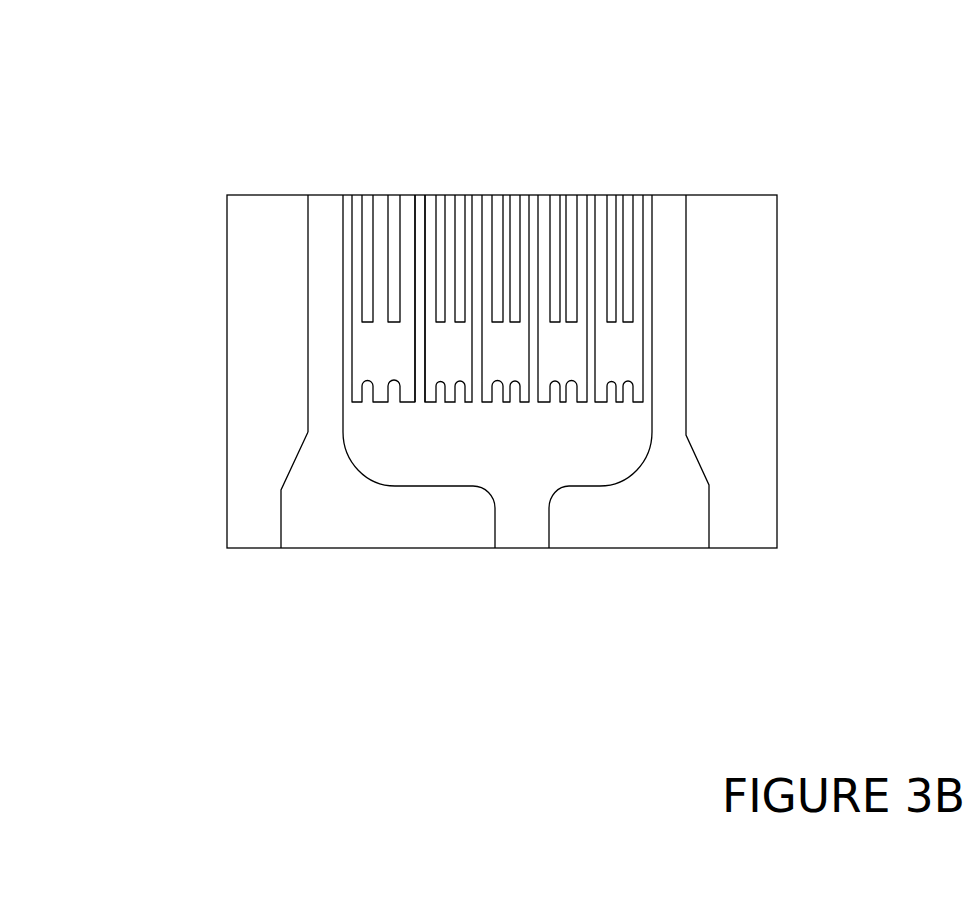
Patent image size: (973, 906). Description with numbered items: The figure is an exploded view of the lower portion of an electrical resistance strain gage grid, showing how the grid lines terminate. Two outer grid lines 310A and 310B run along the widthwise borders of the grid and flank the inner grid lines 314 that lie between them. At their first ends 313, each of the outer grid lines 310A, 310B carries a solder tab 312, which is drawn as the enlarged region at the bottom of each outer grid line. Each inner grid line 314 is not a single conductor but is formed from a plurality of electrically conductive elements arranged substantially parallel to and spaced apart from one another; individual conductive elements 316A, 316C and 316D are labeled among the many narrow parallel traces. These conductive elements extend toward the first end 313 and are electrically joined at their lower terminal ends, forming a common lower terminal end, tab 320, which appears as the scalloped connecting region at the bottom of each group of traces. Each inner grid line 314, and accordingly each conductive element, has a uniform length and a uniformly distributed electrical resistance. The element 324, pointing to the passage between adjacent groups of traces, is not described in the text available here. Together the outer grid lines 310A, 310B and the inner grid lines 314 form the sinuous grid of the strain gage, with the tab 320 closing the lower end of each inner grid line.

The outer grid line 310A is at (186, 313).
The outer grid line 310B is at (797, 371).
The solder tab 312 is at (474, 422).
The first end 313 is at (196, 492).
The inner grid line 314 is at (336, 446).
The conductive element 316A is at (444, 162).
The conductive element 316C is at (493, 261).
The flow channel 316D is at (471, 191).
The tab 320 is at (349, 340).
The connecting channel 324 is at (530, 443).